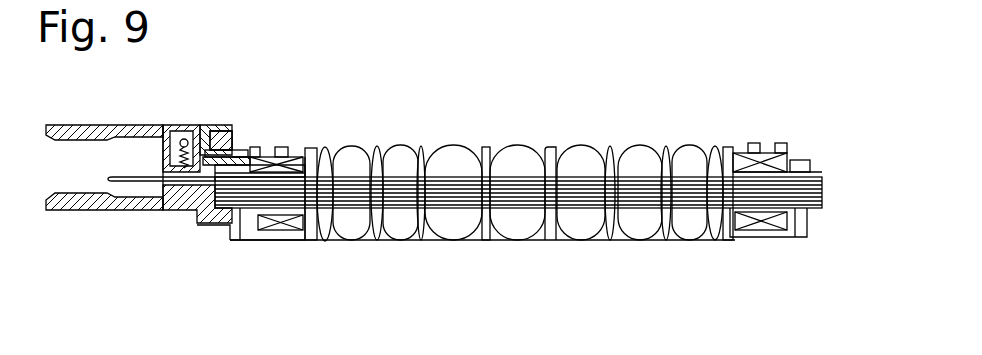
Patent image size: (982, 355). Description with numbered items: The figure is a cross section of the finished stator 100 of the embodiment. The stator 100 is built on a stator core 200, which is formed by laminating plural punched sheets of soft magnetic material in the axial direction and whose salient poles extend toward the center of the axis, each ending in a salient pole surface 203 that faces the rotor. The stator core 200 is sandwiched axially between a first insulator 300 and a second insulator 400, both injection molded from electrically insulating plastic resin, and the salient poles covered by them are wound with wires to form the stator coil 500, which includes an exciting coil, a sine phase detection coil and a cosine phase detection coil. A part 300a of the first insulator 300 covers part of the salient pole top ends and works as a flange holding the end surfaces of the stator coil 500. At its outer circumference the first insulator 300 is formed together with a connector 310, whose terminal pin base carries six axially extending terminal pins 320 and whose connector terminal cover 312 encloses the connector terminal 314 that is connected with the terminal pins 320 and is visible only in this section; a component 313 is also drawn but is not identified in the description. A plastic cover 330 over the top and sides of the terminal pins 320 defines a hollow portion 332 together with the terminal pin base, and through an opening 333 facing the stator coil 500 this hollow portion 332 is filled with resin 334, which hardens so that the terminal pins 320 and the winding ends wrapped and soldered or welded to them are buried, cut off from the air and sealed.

The stator 100 is at (823, 288).
The stator core 200 is at (813, 210).
The salient pole surface 203 is at (403, 202).
The first insulator 300 is at (792, 165).
The part of the first insulator 300a is at (407, 163).
The connector 310 is at (227, 245).
The connector terminal cover 312 is at (92, 130).
The connector cavity 313 is at (77, 190).
The connector terminal 314 is at (133, 183).
The terminal pins 320 is at (182, 141).
The cover 330 is at (222, 137).
The hollow portion 332 is at (224, 152).
The opening 333 is at (236, 132).
The resin 334 is at (198, 143).
The second insulator 400 is at (248, 222).
The stator coil 500 is at (283, 225).